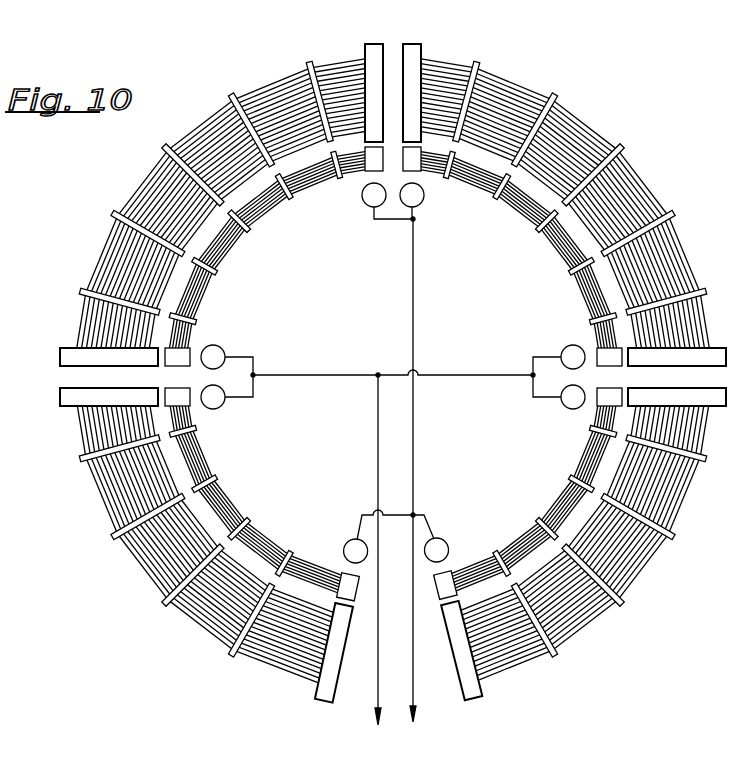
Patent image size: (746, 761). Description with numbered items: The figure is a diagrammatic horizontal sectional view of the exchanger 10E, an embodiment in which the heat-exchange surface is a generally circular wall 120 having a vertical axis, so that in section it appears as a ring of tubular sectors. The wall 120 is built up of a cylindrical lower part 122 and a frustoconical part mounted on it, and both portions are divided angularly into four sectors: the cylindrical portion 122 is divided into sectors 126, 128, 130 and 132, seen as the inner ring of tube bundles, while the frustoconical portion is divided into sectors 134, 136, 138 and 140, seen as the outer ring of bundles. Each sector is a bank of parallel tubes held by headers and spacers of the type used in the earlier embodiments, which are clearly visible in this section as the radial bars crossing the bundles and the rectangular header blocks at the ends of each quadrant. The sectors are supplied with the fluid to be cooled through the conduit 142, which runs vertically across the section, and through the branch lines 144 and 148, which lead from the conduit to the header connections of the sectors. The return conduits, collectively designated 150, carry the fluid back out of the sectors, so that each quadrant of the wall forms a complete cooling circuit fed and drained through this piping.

The exchanger 10E is at (92, 172).
The circular wall 120 is at (222, 12).
The cylindrical lower part 122 is at (276, 215).
The sector 126 is at (541, 218).
The sector 128 is at (565, 497).
The sector 130 is at (244, 511).
The sector 132 is at (203, 293).
The sector 134 is at (630, 192).
The sector 136 is at (654, 562).
The sector 138 is at (140, 558).
The sector 140 is at (104, 266).
The conduit 142 is at (415, 428).
The branch line 144 is at (432, 533).
The branch line 148 is at (393, 221).
The return conduits 150 is at (378, 410).